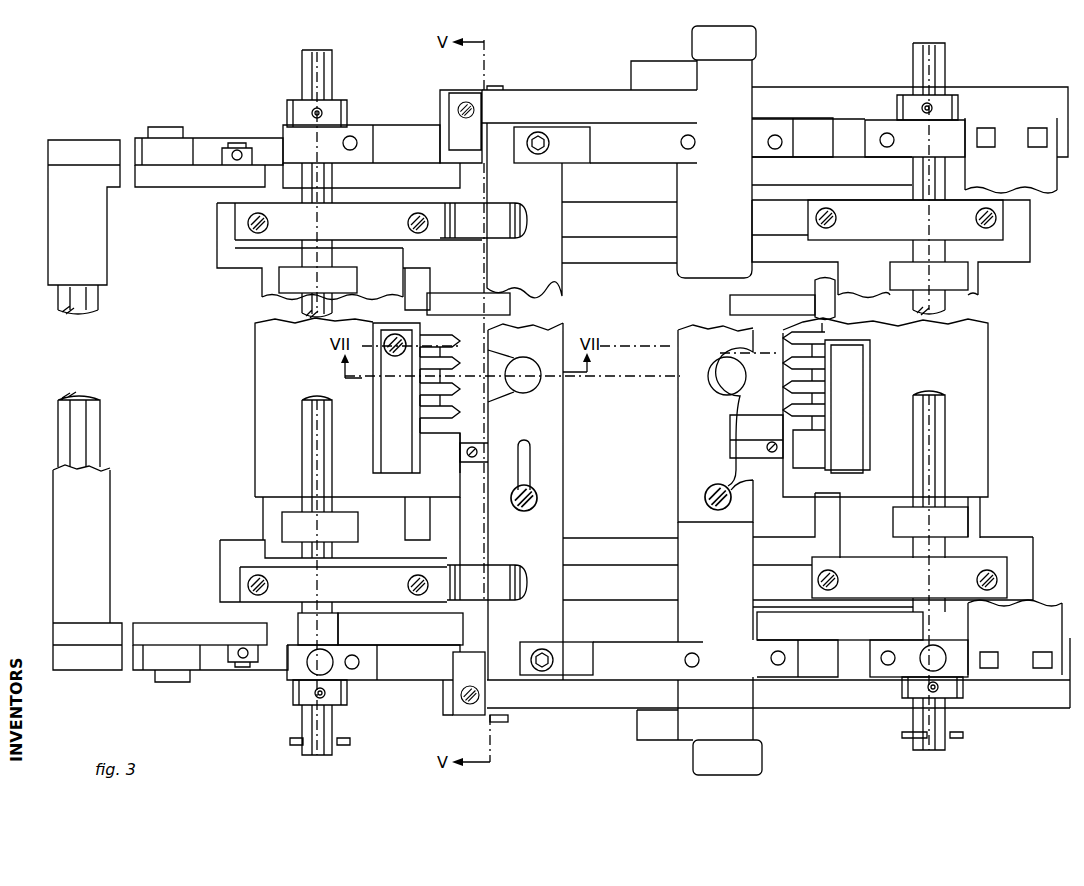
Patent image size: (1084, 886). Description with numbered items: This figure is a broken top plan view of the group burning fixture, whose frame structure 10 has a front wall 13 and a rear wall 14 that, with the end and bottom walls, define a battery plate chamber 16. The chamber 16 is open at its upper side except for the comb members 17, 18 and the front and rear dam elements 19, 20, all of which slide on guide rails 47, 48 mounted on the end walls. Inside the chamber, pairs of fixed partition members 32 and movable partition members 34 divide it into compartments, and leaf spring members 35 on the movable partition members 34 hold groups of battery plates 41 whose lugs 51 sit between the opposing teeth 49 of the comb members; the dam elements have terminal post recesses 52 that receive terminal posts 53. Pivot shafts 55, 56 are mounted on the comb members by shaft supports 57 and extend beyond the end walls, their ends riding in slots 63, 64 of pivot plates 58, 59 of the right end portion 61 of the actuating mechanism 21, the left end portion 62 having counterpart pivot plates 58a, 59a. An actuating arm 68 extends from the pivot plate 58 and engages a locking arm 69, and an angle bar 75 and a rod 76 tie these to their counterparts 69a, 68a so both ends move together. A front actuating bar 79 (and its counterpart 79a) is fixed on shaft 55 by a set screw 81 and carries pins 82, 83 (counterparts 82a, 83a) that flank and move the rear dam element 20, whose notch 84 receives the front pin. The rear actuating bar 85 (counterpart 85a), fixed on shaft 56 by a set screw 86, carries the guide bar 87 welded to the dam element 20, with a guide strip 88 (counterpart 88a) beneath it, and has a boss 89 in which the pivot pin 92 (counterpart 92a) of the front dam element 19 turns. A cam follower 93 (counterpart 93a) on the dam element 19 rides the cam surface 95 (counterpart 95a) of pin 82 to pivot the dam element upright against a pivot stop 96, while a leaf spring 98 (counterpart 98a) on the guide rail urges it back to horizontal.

The frame structure 10 is at (250, 467).
The front wall 13 is at (440, 328).
The rear wall 14 is at (833, 306).
The battery plate chamber 16 is at (633, 440).
The comb member 17 is at (268, 353).
The comb member 18 is at (975, 385).
The front dam element 19 is at (560, 287).
The rear dam element 20 is at (697, 474).
The actuating mechanism 21 is at (42, 198).
The fixed partition member 32 is at (510, 304).
The movable partition member 34 is at (750, 449).
The leaf spring member 35 is at (773, 432).
The battery plates 41 is at (617, 350).
The guide rail 47 is at (621, 552).
The guide rail 48 is at (618, 255).
The teeth 49 is at (442, 388).
The lugs 51 is at (773, 350).
The terminal post recess 52 is at (545, 395).
The terminal post 53 is at (545, 380).
The pivot shaft 55 is at (325, 460).
The pivot shaft 56 is at (932, 460).
The shaft support 57 is at (965, 275).
The pivot plate 58 is at (390, 633).
The pivot plate 58a is at (392, 172).
The pivot plate 59 is at (843, 620).
The pivot plate 59a is at (772, 174).
The right end portion 61 is at (565, 737).
The left end portion 62 is at (596, 76).
The slot 63 is at (323, 628).
The slot 64 is at (933, 627).
The actuating arm 68 is at (205, 663).
The actuating arm 68a is at (204, 137).
The locking arm 69 is at (205, 628).
The locking arm 69a is at (167, 180).
The angle bar 75 is at (90, 527).
The rod 76 is at (88, 425).
The actuating bar 79 is at (402, 670).
The actuating bar 79a is at (405, 133).
The set screw 81 is at (308, 666).
The pin 82 is at (681, 669).
The pin 82a is at (643, 182).
The pin 83 is at (778, 666).
The pin 83a is at (773, 133).
The notch 84 is at (687, 637).
The rear actuating bar 85 is at (585, 700).
The rear actuating bar 85a is at (822, 95).
The set screw 86 is at (925, 652).
The guide bar 87 is at (667, 728).
The guide strip 88 is at (752, 752).
The guide strip 88a is at (755, 33).
The boss 89 is at (450, 702).
The pivot pin 92 is at (504, 718).
The pivot pin 92a is at (498, 82).
The cam follower 93 is at (565, 650).
The cam follower 93a is at (573, 152).
The cam surface 95 is at (697, 652).
The cam surface 95a is at (681, 152).
The pivot stop 96 is at (478, 665).
The leaf spring 98 is at (495, 575).
The leaf spring 98a is at (498, 233).